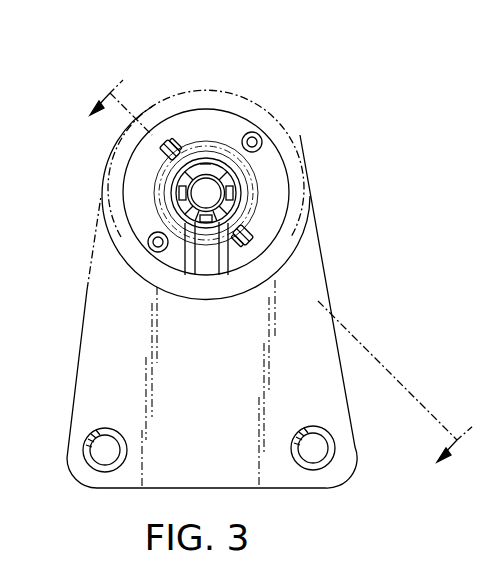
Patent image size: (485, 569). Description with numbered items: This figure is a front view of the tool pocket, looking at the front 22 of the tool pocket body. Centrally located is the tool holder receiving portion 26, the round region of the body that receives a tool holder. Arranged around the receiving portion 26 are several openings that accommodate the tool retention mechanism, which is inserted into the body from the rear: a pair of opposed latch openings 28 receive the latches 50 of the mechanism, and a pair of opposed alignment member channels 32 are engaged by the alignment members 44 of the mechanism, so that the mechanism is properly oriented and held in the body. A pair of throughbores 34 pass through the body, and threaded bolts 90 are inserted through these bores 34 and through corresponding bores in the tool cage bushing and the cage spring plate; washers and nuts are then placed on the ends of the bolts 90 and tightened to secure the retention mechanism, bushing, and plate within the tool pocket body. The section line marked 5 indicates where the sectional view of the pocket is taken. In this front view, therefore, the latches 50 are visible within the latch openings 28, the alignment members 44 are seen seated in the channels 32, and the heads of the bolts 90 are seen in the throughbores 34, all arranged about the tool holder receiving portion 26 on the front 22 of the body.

The section line 5- 5 is at (283, 270).
The front 22 is at (322, 253).
The tool holder receiving portion 26 is at (277, 180).
The latch openings 28 is at (178, 141).
The alignment member channels 32 is at (212, 162).
The throughbores 34 is at (253, 132).
The alignment members 44 is at (229, 170).
The latches 50 is at (162, 141).
The threaded bolts 90 is at (262, 142).